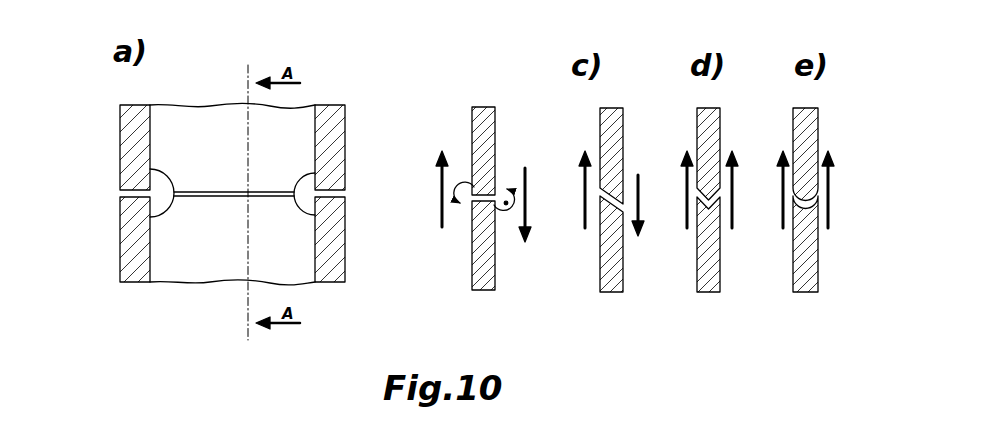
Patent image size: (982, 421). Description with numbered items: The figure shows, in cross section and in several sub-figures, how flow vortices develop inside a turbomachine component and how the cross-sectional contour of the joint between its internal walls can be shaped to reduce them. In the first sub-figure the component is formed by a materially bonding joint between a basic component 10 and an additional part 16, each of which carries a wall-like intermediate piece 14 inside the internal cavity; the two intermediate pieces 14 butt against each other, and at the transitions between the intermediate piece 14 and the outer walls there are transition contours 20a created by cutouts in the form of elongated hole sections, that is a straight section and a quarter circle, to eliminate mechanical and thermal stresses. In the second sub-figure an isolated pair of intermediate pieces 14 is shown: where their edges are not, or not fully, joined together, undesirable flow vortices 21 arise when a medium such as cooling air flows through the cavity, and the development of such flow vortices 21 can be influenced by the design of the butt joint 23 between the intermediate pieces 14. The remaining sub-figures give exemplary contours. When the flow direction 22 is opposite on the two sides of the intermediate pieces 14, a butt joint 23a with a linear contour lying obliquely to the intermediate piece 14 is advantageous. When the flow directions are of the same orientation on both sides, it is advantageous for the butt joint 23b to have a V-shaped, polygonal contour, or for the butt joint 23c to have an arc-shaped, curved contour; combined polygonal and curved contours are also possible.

The basic component 10 is at (127, 236).
The intermediate piece 14 is at (203, 150).
The additional part 16 is at (130, 151).
The transition contour 20a is at (162, 208).
The flow vortex 21 is at (507, 205).
The flow direction 22 is at (645, 196).
The butt joint 23 is at (489, 189).
The butt joint with oblique linear contour 23a is at (614, 191).
The butt joint with V-shaped contour 23b is at (709, 188).
The butt joint with arc-shaped contour 23c is at (809, 193).